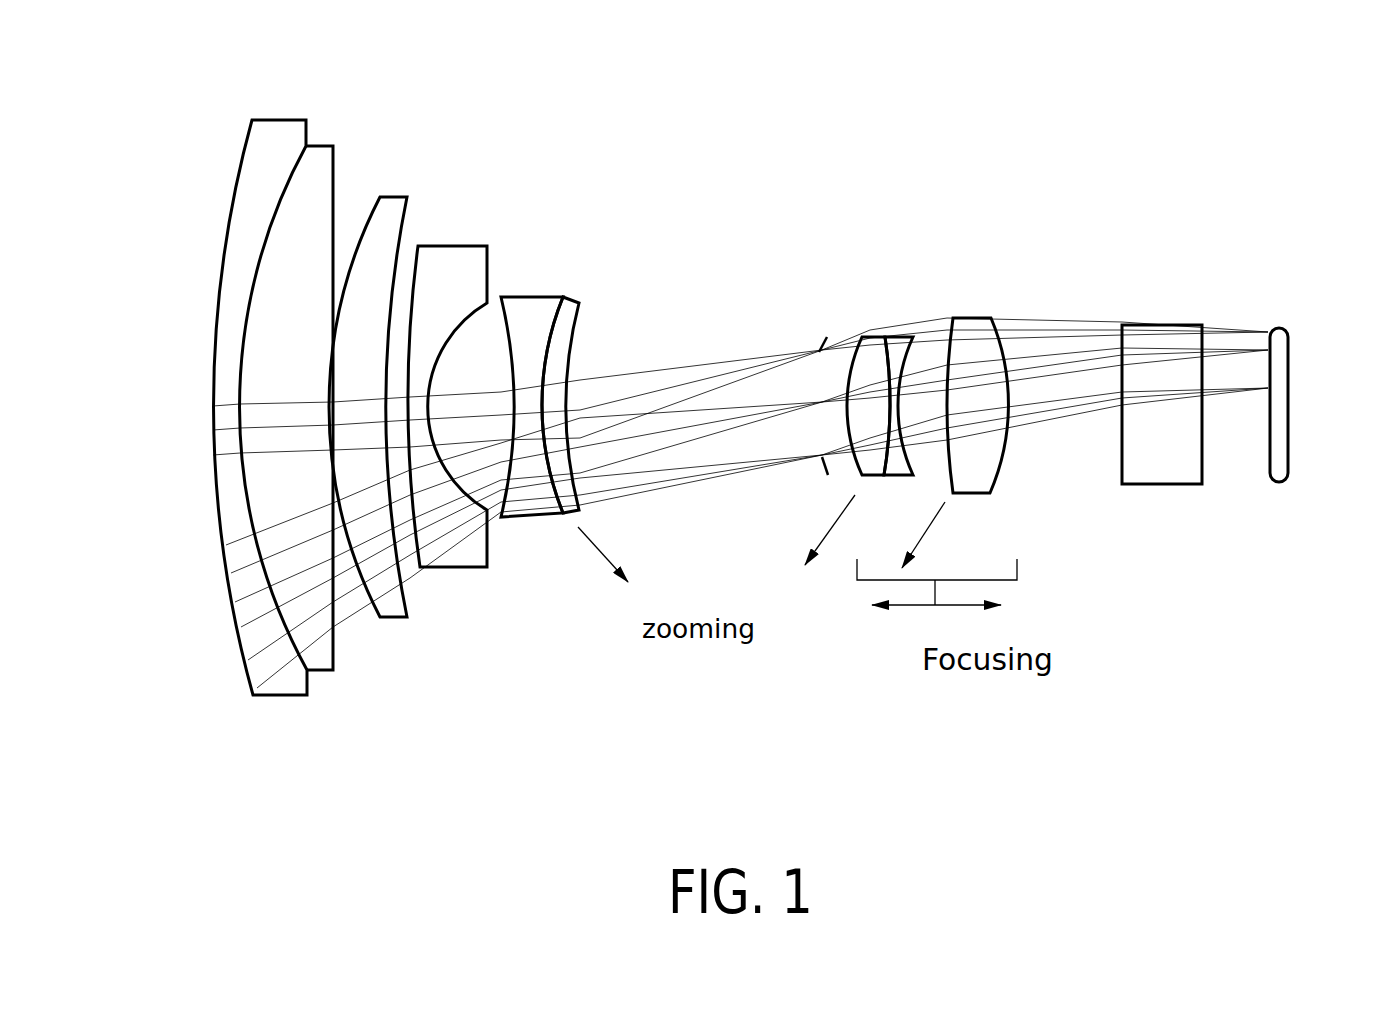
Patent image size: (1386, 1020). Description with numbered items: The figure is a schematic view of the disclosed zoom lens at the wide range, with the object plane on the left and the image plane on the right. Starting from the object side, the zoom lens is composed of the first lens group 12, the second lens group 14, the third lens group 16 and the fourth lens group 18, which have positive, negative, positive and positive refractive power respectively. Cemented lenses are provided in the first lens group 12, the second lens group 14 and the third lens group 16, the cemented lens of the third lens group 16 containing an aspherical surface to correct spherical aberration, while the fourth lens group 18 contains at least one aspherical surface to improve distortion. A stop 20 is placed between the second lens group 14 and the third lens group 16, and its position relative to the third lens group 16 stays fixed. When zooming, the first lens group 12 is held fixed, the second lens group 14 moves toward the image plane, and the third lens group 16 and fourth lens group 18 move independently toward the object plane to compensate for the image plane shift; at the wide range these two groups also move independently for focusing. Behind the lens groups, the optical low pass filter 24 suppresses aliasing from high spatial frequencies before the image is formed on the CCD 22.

The first lens group 12 is at (310, 369).
The second lens group 14 is at (493, 365).
The third lens group 16 is at (880, 359).
The fourth lens group 18 is at (983, 477).
The stop 20 is at (817, 385).
The CCD 22 is at (1282, 362).
The optical low pass filter 24 is at (1159, 478).